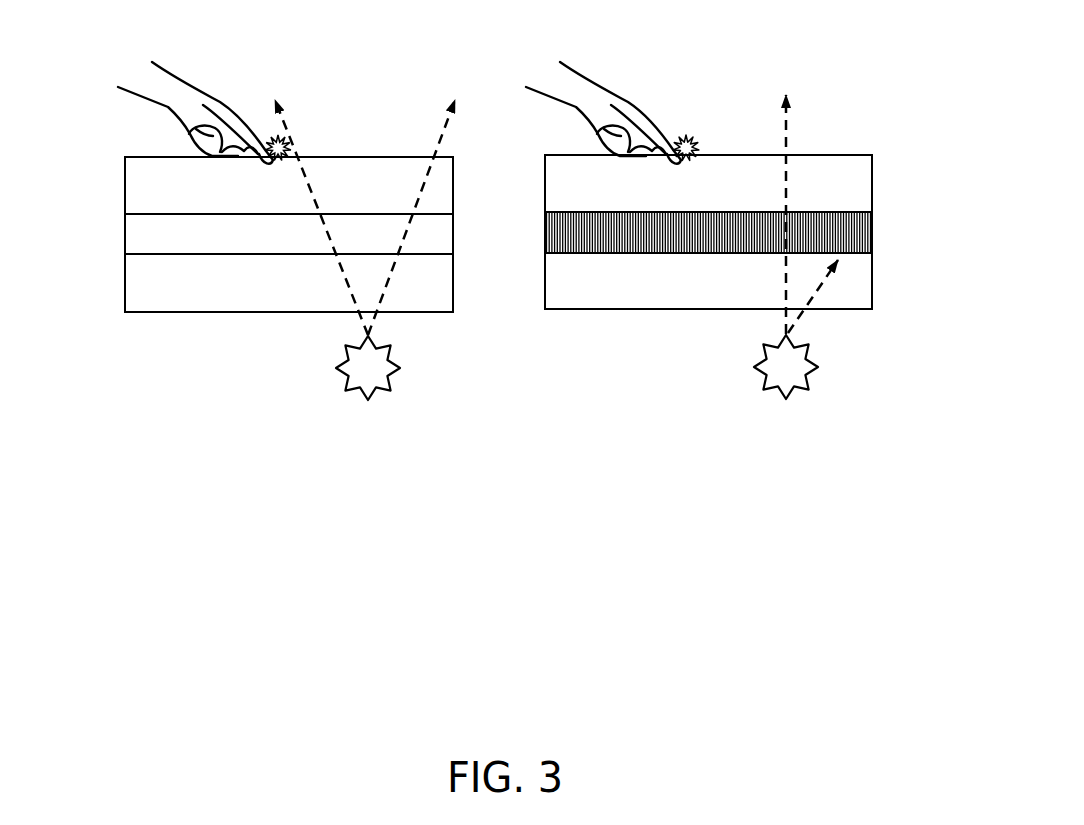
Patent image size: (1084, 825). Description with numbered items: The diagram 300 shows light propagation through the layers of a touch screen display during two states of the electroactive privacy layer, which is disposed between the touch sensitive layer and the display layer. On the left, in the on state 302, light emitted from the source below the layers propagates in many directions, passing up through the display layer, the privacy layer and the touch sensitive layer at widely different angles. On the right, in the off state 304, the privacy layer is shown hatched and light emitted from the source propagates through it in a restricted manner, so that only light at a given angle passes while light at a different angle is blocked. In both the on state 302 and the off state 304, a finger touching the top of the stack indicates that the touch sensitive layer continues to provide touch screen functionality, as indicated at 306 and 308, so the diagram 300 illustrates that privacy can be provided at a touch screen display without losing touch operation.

The touch sensitive display operation scenarios 300 is at (501, 379).
The on state 302 is at (257, 237).
The off state 304 is at (736, 241).
The touch screen functionality 306 is at (198, 48).
The touch screen functionality 308 is at (637, 57).